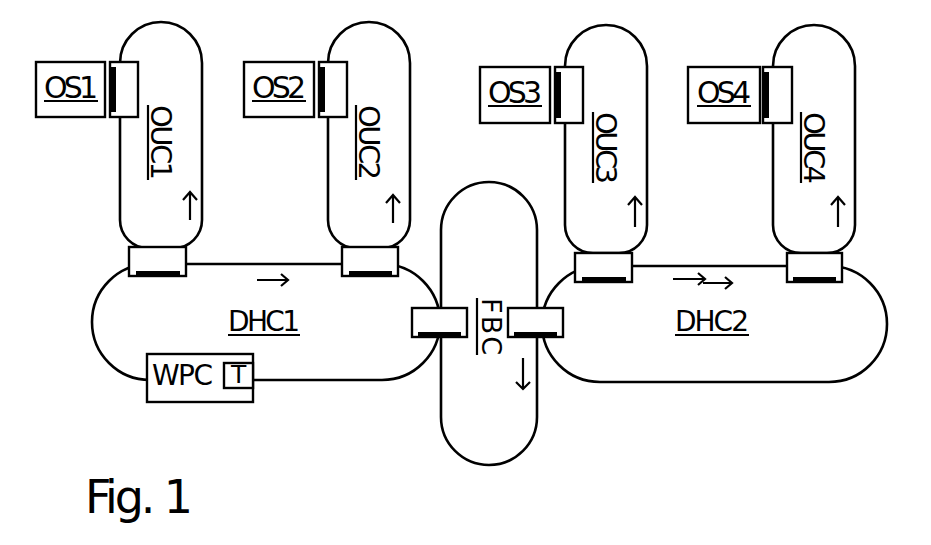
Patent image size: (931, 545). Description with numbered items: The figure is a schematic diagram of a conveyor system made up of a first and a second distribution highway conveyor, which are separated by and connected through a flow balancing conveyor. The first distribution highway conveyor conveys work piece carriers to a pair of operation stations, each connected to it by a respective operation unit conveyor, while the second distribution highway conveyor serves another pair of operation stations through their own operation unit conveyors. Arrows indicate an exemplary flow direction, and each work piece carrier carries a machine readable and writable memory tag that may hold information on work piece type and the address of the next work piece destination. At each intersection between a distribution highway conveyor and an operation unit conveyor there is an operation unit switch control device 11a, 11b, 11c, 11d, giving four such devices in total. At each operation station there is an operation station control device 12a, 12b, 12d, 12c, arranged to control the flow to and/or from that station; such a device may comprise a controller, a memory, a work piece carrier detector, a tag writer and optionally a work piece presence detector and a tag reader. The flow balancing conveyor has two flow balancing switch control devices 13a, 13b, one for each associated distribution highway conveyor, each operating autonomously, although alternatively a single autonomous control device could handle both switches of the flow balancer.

The operation unit switch control device 11a is at (157, 261).
The operation unit switch control device 11b is at (370, 261).
The operation unit switch control device 11c is at (603, 267).
The operation unit switch control device 11d is at (814, 267).
The operation station control device 12a is at (124, 89).
The operation station control device 12b is at (333, 89).
The operation station control device 12c is at (777, 95).
The operation station control device 12d is at (569, 95).
The flow balancing switch control device 13a is at (439, 322).
The flow balancing switch control device 13b is at (535, 322).